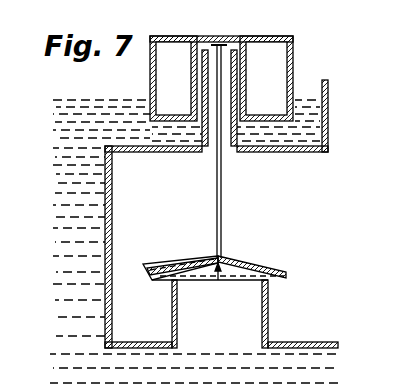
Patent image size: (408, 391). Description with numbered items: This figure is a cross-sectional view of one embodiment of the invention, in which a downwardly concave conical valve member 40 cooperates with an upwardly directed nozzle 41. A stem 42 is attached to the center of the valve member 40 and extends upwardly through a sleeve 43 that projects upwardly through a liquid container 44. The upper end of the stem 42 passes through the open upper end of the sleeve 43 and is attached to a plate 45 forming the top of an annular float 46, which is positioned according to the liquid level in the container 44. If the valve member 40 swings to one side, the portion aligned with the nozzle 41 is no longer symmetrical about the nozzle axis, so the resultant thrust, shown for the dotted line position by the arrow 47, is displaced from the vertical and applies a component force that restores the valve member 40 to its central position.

The conical valve member 40 is at (250, 262).
The nozzle 41 is at (268, 310).
The stem 42 is at (221, 221).
The sleeve 43 is at (240, 141).
The liquid container 44 is at (311, 152).
The plate 45 is at (246, 64).
The annular float 46 is at (286, 68).
The arrow 47 is at (216, 283).